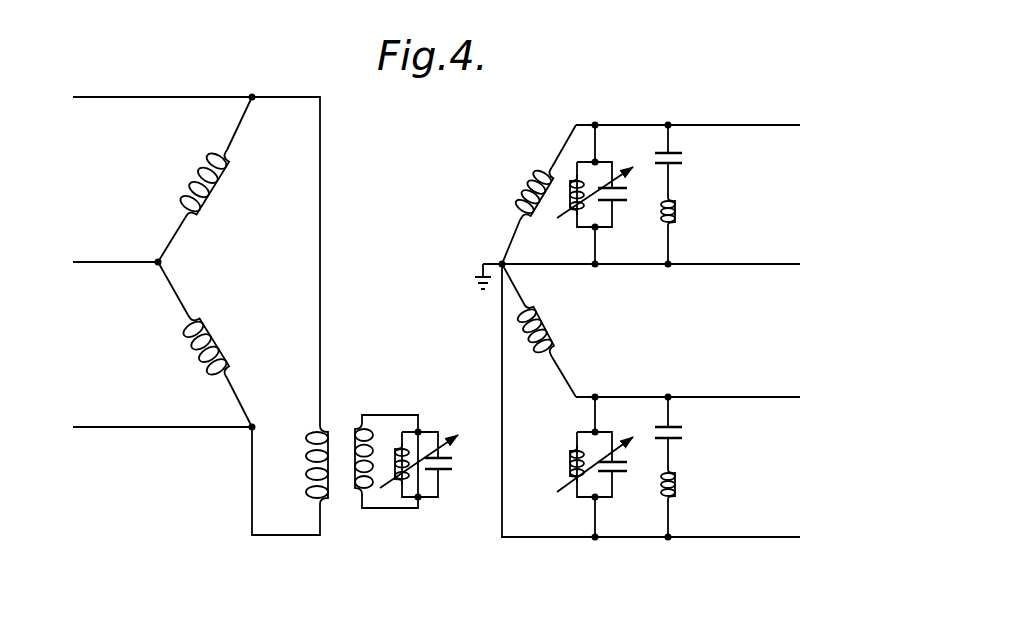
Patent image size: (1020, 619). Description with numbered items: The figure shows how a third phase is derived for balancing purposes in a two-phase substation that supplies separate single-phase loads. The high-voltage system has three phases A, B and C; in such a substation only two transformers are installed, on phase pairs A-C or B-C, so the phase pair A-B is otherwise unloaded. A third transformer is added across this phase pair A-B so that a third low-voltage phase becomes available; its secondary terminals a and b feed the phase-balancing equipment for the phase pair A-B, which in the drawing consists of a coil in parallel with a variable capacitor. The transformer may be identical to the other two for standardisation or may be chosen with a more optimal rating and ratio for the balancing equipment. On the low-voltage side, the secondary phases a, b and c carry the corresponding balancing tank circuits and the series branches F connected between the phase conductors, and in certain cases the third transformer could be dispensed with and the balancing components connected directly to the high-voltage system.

The phase A is at (252, 86).
The phase B is at (441, 331).
The phase C is at (153, 250).
The secondary phase a is at (461, 278).
The secondary phase b is at (467, 417).
The secondary phase c is at (519, 258).
The series filter branch F (capacitor and coil) F is at (671, 331).